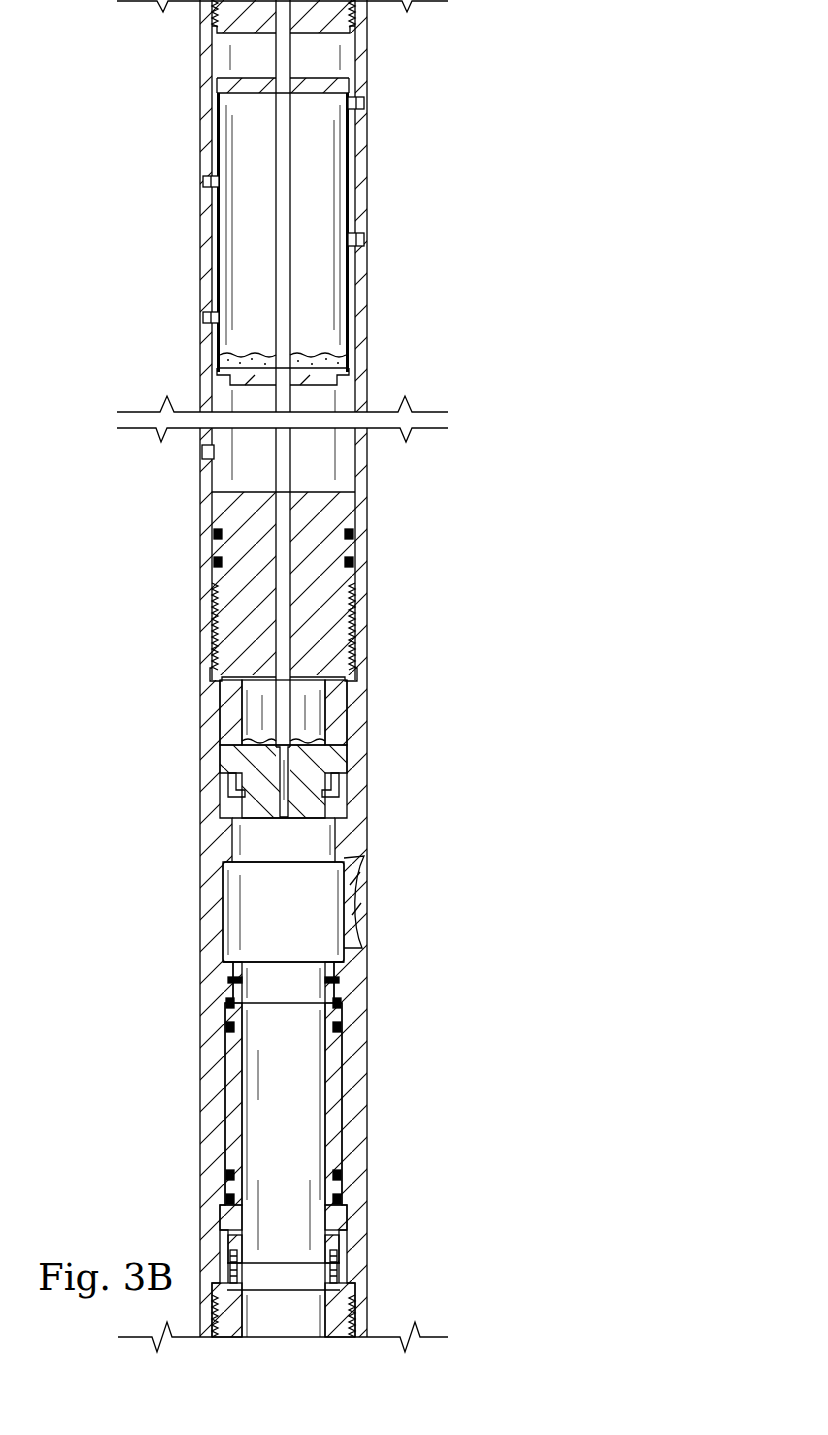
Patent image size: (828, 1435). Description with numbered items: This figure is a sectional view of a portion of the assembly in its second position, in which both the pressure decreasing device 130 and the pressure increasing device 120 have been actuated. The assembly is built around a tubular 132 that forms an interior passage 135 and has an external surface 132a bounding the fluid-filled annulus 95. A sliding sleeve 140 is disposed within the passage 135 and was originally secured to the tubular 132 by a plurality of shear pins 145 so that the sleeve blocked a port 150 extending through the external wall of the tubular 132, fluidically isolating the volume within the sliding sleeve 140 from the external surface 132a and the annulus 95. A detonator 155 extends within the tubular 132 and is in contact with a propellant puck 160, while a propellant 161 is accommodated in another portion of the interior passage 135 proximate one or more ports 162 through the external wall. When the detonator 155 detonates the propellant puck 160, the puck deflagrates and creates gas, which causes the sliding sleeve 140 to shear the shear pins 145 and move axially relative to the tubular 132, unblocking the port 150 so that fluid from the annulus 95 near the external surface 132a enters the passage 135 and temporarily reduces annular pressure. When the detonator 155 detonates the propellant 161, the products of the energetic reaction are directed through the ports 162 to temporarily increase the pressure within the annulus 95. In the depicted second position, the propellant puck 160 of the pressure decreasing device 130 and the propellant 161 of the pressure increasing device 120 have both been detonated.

The pressure increasing device 120 is at (120, 94).
The annulus 95 is at (437, 193).
The pressure decreasing device 130 is at (366, 312).
The tubular 132 is at (357, 50).
The external surface 132a is at (222, 1005).
The interior passage 135 is at (305, 1152).
The sliding sleeve 140 is at (232, 1102).
The shear pins 145 is at (335, 795).
The port 150 is at (360, 910).
The detonator 155 is at (283, 150).
The propellant puck 160 is at (325, 735).
The propellant 161 is at (330, 352).
The ports 162 is at (200, 182).